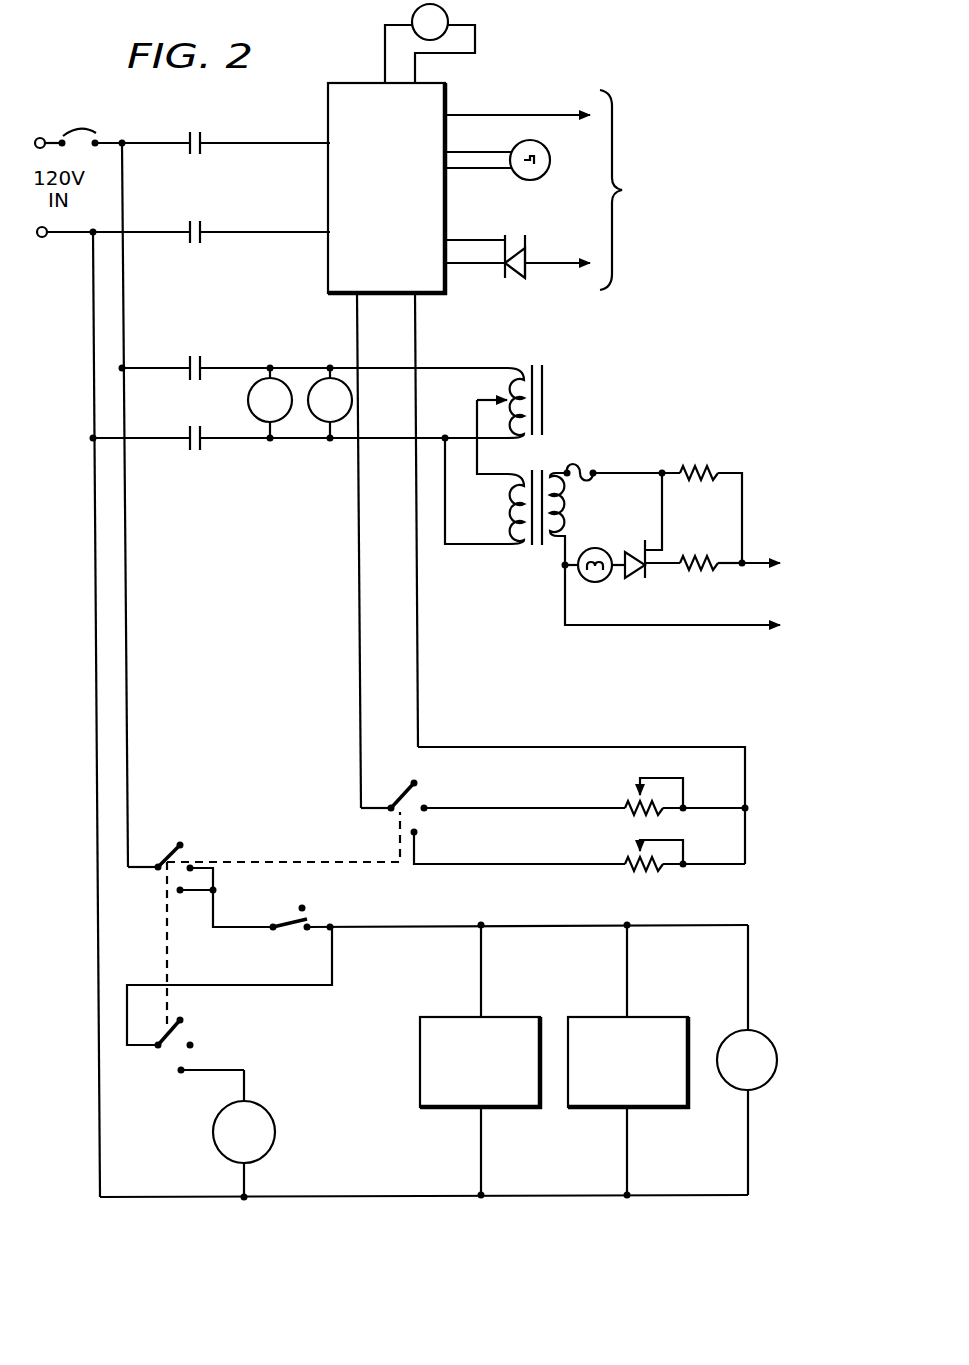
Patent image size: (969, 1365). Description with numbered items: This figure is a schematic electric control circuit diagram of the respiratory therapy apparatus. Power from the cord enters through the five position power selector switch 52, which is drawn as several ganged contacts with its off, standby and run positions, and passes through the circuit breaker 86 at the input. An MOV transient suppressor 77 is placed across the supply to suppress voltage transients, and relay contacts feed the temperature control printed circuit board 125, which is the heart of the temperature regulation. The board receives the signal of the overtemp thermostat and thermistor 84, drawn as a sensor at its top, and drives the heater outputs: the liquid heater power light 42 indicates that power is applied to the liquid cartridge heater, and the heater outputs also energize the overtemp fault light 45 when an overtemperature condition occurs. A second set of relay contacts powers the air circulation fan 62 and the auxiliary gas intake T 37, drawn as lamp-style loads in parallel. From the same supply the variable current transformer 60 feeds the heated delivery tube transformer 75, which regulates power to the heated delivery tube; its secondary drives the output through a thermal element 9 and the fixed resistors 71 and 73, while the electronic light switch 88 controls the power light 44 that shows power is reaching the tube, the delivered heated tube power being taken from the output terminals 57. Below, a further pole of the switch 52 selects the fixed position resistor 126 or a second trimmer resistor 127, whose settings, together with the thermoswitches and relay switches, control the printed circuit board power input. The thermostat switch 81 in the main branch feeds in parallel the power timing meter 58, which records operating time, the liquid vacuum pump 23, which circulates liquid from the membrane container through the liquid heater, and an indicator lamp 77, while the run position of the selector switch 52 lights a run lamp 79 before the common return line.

The circuit breaker 86 is at (77, 127).
The MOV transient suppressor 77 is at (188, 152).
The temperature control printed circuit board 125 is at (399, 204).
The overtemp thermostat and thermistor 84 is at (410, 16).
The liquid heater power light 42 is at (548, 170).
The overtemp fault light 45 is at (678, 171).
The air circulation fan 62 is at (284, 369).
The auxiliary gas intake T 37 is at (339, 369).
The relay K2 contacts / run lamp 79 is at (203, 373).
The variable current transformer 60 is at (545, 400).
The heated delivery tube transformer 75 is at (536, 475).
The thermal fuse 9 is at (590, 463).
The fixed resistor 71 is at (696, 462).
The fixed resistor 73 is at (700, 555).
The electronic light switch 88 is at (633, 548).
The power light 44 is at (606, 579).
The HDT power output 57 is at (802, 601).
The five position power selector switch 52 is at (165, 855).
The fixed position resistor 126 is at (663, 776).
The potentiometer 127 is at (663, 833).
The thermostat switch 81 is at (308, 914).
The power timing meter 58 is at (486, 1079).
The liquid vacuum pump 23 is at (633, 1079).